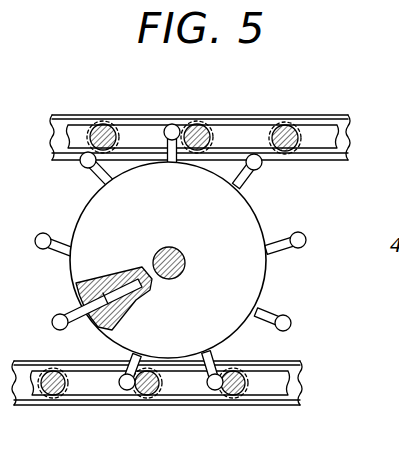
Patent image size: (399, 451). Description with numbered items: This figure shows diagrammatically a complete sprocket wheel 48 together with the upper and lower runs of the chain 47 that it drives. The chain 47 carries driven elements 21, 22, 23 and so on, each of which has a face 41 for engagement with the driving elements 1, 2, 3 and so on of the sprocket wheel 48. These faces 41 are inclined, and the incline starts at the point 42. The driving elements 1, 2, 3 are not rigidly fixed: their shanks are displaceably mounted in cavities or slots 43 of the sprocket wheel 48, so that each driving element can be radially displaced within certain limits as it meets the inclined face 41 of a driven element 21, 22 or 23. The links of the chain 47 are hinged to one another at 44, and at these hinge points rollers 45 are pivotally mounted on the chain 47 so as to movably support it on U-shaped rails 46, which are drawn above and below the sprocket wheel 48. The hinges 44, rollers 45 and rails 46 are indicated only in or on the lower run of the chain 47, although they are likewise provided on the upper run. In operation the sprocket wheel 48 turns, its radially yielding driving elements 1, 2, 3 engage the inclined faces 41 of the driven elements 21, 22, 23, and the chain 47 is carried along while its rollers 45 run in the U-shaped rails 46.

The driving element 1 is at (254, 168).
The driving element 2 is at (170, 127).
The driving element 3 is at (87, 168).
The driven element 21 is at (284, 125).
The driven element 22 is at (197, 123).
The driven element 23 is at (105, 124).
The face 41 is at (80, 150).
The start of incline 42 is at (95, 135).
The cavity or slot 43 is at (130, 272).
The hinge 44 is at (297, 144).
The roller 45 is at (287, 152).
The U-shaped rail 46 is at (356, 151).
The chain 47 is at (335, 138).
The sprocket wheel 48 is at (254, 292).